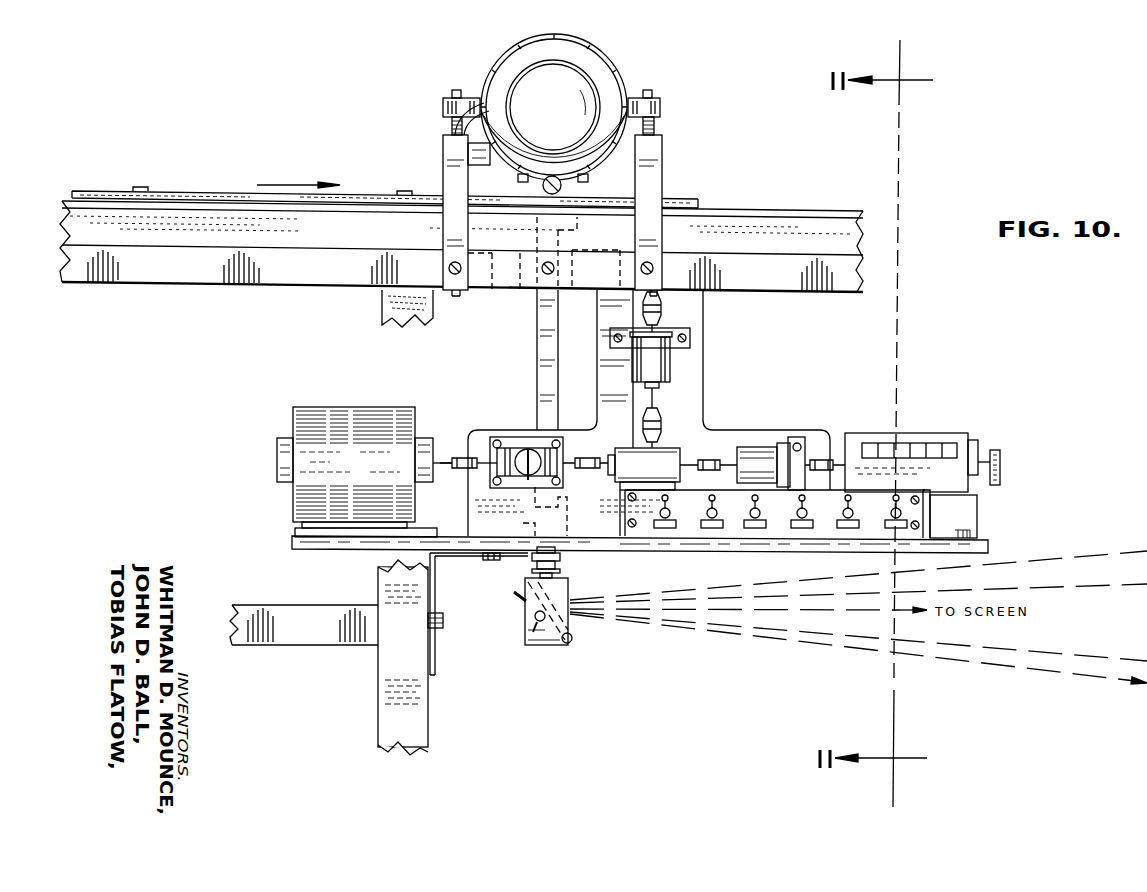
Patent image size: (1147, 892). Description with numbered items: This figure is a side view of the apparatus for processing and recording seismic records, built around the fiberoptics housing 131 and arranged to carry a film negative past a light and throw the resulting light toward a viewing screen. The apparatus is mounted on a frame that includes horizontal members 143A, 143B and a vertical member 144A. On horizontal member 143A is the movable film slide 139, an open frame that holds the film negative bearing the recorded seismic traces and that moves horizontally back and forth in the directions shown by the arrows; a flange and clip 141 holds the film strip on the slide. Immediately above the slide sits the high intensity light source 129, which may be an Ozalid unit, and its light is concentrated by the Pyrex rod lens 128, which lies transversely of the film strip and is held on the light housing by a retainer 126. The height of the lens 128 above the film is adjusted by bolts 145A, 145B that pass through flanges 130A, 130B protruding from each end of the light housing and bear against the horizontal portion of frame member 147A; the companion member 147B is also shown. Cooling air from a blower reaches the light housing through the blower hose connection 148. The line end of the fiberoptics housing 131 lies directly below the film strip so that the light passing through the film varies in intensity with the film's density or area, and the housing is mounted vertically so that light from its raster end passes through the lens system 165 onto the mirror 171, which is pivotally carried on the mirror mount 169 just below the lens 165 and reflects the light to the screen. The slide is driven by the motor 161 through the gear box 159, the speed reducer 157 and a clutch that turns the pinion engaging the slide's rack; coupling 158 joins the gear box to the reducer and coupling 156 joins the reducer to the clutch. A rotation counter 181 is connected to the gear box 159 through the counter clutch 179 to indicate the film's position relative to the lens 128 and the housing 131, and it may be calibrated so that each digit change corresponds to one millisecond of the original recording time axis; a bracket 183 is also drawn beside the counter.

The retainer 126 is at (521, 178).
The Pyrex rod lens 128 is at (613, 178).
The light source 129 is at (567, 100).
The flange 130A is at (460, 95).
The flange 130B is at (645, 95).
The fiberoptics housing 131 is at (535, 375).
The movable film slide 139 is at (173, 195).
The clip 141 is at (408, 193).
The horizontal member 143A is at (158, 266).
The horizontal member 143B is at (303, 628).
The vertical member 144A is at (383, 303).
The bolt 145A is at (448, 125).
The bolt 145B is at (656, 122).
The frame member 147A is at (443, 225).
The post 147B is at (655, 150).
The blower hose connection 148 is at (470, 152).
The coupling 156 is at (662, 308).
The speed reducer 157 is at (658, 364).
The coupling 158 is at (645, 418).
The gear box 159 is at (665, 458).
The motor 161 is at (313, 430).
The lens system 165 is at (560, 558).
The mirror mount 169 is at (567, 645).
The mirror 171 is at (522, 594).
The counter clutch 179 is at (760, 452).
The rotation counter 181 is at (960, 445).
The bracket 183 is at (918, 512).